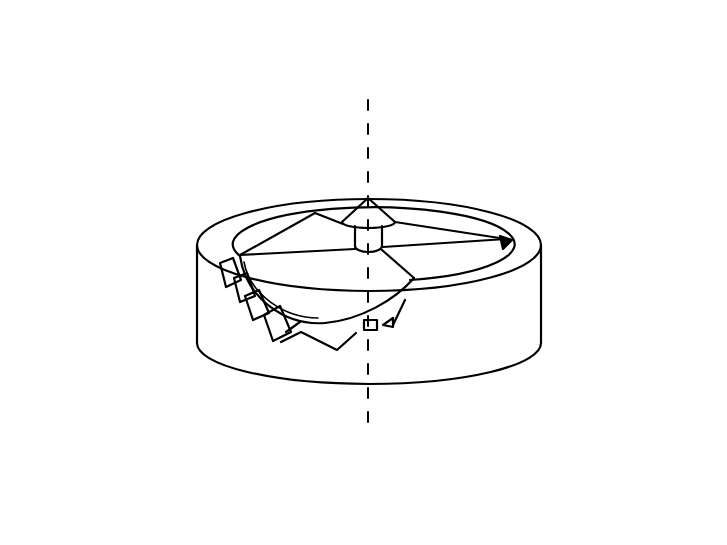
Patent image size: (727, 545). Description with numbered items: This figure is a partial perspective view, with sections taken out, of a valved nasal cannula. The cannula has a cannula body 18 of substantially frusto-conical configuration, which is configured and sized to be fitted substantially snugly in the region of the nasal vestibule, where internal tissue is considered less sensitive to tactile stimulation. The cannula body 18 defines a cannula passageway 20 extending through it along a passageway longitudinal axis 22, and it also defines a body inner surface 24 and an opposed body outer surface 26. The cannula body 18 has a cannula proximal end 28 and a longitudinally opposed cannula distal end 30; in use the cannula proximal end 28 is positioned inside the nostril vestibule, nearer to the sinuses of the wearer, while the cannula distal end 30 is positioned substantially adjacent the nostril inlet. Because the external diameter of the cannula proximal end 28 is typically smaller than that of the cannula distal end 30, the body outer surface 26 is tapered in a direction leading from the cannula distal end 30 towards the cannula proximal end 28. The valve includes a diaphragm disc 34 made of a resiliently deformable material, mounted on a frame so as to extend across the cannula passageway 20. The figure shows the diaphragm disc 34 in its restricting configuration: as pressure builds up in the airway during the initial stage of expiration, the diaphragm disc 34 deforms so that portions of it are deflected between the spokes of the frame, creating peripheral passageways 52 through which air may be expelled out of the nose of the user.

The cannula body 18 is at (192, 318).
The cannula passageway 20 is at (283, 228).
The passageway longitudinal axis 22 is at (368, 86).
The body inner surface 24 is at (253, 229).
The body outer surface 26 is at (520, 313).
The cannula proximal end 28 is at (207, 238).
The cannula distal end 30 is at (221, 362).
The diaphragm disc 34 is at (486, 247).
The peripheral passageways 52 is at (359, 325).